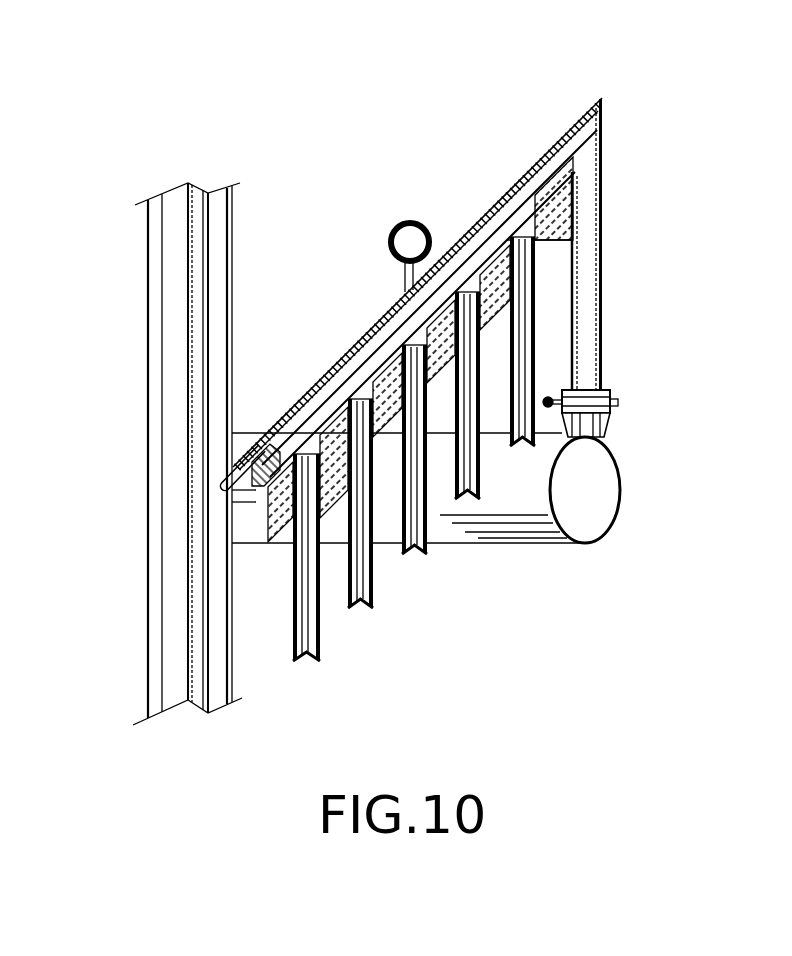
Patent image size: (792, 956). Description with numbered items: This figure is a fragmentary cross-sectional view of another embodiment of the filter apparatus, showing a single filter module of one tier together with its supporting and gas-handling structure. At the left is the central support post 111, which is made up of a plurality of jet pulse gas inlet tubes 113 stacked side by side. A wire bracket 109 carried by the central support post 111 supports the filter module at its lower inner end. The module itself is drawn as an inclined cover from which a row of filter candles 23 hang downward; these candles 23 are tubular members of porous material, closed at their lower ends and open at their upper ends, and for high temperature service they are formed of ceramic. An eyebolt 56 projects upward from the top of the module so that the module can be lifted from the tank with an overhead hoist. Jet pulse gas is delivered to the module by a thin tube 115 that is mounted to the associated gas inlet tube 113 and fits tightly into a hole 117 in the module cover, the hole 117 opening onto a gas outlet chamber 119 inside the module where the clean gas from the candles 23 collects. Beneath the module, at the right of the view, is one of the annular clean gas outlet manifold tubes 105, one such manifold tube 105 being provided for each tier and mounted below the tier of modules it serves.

The central support post 111 is at (246, 427).
The jet pulse gas inlet tube 113 is at (232, 272).
The thin tube 115 is at (231, 461).
The hole 117 is at (268, 432).
The gas outlet chamber 119 is at (523, 208).
The wire bracket 109 is at (253, 502).
The eyebolt 56 is at (393, 228).
The filter candle 23 is at (320, 632).
The annular clean gas outlet manifold tube 105 is at (623, 477).